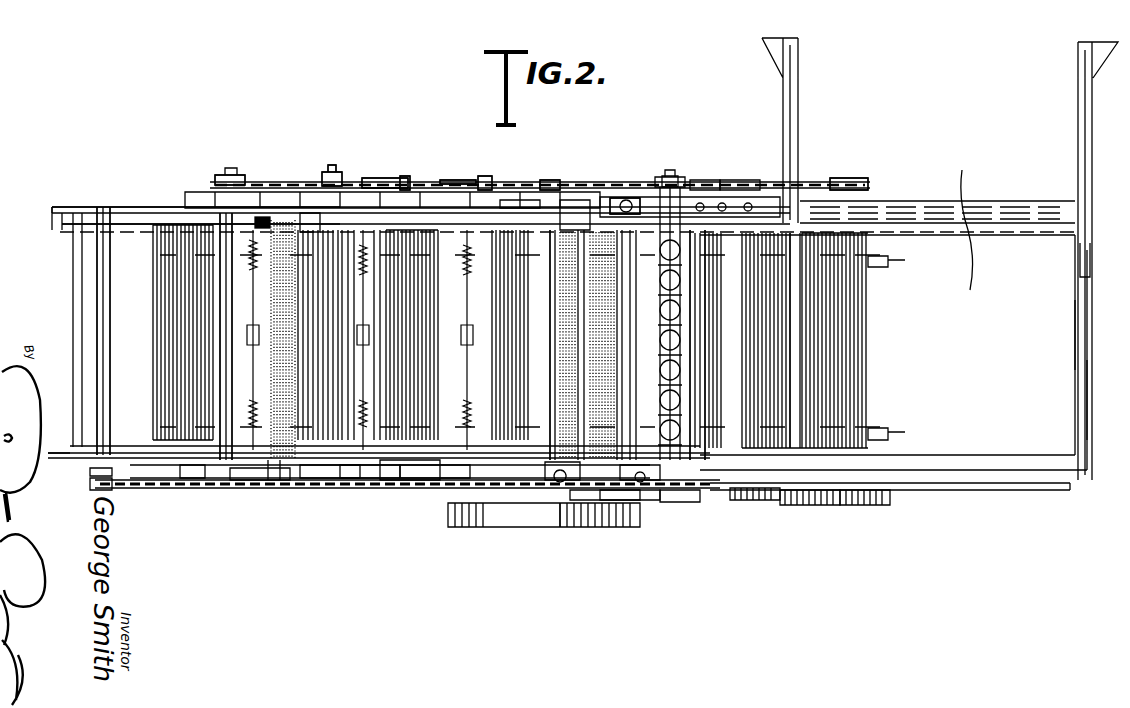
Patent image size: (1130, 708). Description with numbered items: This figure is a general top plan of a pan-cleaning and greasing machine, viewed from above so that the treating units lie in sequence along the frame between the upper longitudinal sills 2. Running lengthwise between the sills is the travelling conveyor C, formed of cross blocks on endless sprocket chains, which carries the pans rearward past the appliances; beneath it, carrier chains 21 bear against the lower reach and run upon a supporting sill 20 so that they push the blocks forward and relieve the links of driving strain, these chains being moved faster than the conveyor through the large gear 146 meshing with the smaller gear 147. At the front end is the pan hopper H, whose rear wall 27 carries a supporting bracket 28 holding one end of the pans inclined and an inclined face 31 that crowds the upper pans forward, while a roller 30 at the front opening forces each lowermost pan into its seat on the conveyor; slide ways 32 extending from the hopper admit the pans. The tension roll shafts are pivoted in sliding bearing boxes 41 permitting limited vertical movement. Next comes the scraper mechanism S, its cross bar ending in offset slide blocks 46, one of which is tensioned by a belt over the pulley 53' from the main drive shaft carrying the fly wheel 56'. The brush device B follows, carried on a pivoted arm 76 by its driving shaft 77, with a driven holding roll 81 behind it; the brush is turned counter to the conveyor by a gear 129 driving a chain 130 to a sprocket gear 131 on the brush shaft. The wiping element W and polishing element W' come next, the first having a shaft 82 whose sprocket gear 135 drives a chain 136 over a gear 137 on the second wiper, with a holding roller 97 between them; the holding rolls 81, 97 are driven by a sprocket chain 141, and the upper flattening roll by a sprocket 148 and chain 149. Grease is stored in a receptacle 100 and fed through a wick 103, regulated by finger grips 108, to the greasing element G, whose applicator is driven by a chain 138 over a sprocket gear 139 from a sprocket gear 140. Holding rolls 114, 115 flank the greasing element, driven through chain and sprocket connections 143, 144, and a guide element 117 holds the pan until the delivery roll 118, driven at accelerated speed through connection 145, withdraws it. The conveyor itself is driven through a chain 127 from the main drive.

The upper longitudinal sill 2 is at (1022, 477).
The supporting sill 20 is at (50, 462).
The carrier chains 21 is at (905, 264).
The rear wall 27 is at (1075, 338).
The supporting bracket 28 is at (1085, 400).
The roller 30 is at (790, 412).
The inclined face 31 is at (1080, 252).
The slide ways 32 is at (796, 55).
The sliding bearing boxes 41 is at (700, 372).
The offset slide blocks 46 is at (660, 210).
The pulley 53' is at (693, 157).
The fly wheel 56' is at (577, 531).
The pivoted arm 76 is at (570, 228).
The driving shaft 77 is at (575, 478).
The holding roll 81 is at (552, 350).
The shaft 82 is at (488, 178).
The holding roller 97 is at (435, 313).
The receptacle 100 is at (345, 497).
The wick 103 is at (282, 486).
The finger grips 108 is at (262, 470).
The holding roll 114 is at (330, 172).
The holding roll 115 is at (225, 250).
The guide element 117 is at (137, 218).
The delivery roll 118 is at (100, 388).
The chain 127 is at (852, 180).
The gear 129 is at (685, 500).
The chain 130 is at (640, 490).
The sprocket gear 131 is at (585, 500).
The sprocket gear 135 is at (522, 183).
The chain 136 is at (460, 182).
The gear 137 is at (372, 183).
The chain 138 is at (362, 490).
The sprocket gear 139 is at (256, 490).
The sprocket gear 140 is at (735, 500).
The sprocket chain 141 is at (524, 188).
The chain and sprocket connection 143 is at (396, 182).
The chain and sprocket connection 144 is at (262, 182).
The chain and sprocket connection 145 is at (150, 480).
The large gear 146 is at (815, 505).
The smaller gear 147 is at (888, 498).
The sprocket 148 is at (715, 172).
The chain 149 is at (742, 182).
The brush device B is at (520, 470).
The conveyor C is at (178, 302).
The roller E is at (790, 385).
The greasing element G is at (312, 213).
The pan hopper H is at (968, 158).
The scraper mechanism S is at (618, 190).
The wiping element W is at (416, 507).
The polishing element W' is at (404, 492).